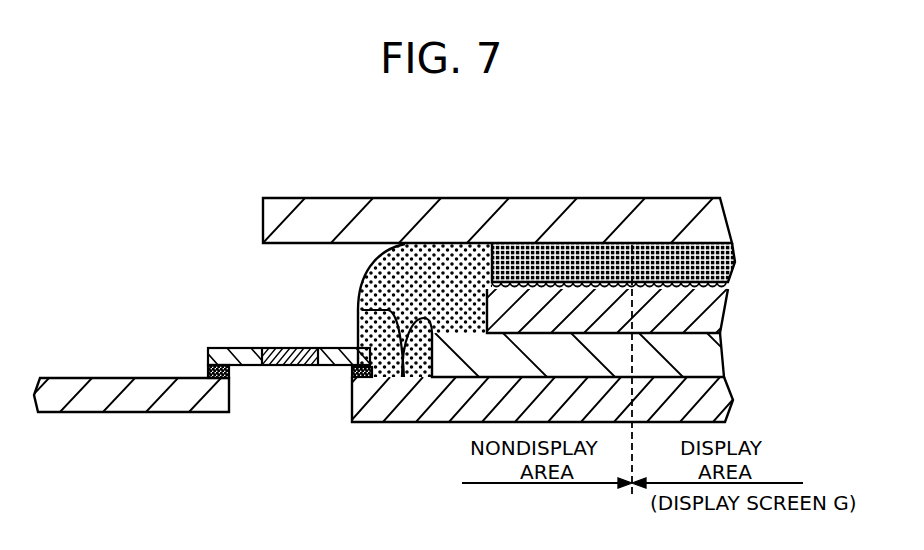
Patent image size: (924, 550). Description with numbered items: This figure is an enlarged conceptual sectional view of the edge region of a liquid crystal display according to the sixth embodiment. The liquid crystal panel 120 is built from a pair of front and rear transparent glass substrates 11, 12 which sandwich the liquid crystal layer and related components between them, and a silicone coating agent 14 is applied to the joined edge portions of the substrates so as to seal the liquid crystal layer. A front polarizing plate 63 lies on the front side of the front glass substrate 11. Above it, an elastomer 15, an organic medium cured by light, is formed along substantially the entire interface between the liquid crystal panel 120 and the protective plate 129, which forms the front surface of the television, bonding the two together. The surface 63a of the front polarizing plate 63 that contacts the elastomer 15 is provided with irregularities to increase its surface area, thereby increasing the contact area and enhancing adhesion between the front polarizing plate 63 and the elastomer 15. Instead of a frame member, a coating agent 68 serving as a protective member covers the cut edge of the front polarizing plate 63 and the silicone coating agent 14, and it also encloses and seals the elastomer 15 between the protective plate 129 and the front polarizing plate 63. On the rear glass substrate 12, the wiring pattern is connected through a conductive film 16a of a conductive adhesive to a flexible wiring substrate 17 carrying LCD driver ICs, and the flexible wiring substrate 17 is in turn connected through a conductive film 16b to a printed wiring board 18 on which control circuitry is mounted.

The protective plate 129 is at (708, 225).
The elastomer 15 is at (715, 260).
The surface of the front polarizing plate 63a is at (590, 283).
The front polarizing plate 63 is at (703, 322).
The front transparent glass substrate 11 is at (706, 357).
The rear transparent glass substrate 12 is at (705, 392).
The liquid crystal panel 120 is at (594, 355).
The coating agent 68 is at (416, 268).
The silicone coating agent 14 is at (420, 337).
The flexible wiring substrate 17 is at (280, 348).
The conductive film 16a is at (352, 372).
The conductive film 16b is at (208, 370).
The printed wiring board 18 is at (128, 412).